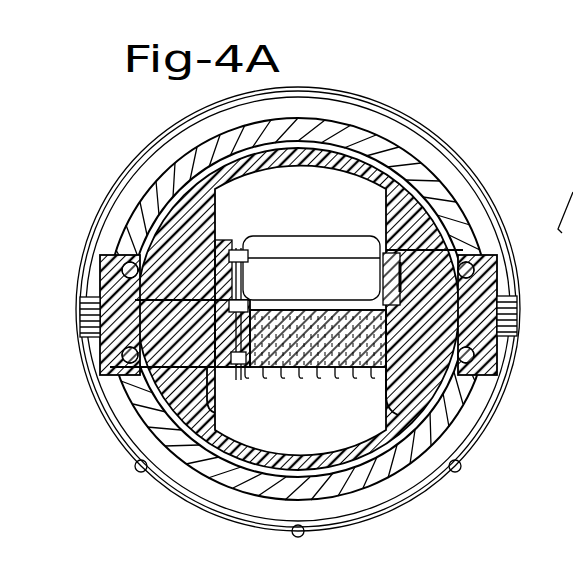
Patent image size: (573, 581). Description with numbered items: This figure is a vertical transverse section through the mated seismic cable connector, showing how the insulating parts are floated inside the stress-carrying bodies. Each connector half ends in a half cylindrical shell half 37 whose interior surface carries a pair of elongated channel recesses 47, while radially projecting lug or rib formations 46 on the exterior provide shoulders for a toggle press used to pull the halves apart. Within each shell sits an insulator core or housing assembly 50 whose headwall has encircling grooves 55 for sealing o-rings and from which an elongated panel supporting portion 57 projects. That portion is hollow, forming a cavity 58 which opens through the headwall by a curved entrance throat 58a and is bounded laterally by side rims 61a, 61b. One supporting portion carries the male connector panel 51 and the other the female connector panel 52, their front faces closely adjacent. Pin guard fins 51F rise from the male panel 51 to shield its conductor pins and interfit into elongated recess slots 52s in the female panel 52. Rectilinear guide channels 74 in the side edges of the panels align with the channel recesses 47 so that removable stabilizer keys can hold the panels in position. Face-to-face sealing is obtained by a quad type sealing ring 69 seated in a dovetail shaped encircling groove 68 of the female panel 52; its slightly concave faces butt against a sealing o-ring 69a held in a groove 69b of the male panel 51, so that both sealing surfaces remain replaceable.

The shell half 37 is at (247, 493).
The lug or shoulder-forming rib formations 46 is at (181, 480).
The channel recesses 47 is at (112, 378).
The insulator core or housing assembly 50 is at (563, 499).
The male connector panel 51 is at (222, 372).
The pin guard fins 51F is at (440, 323).
The female connector panel 52 is at (153, 257).
The recess slots 52s is at (380, 282).
The encircling grooves 55 is at (570, 452).
The panel supporting portion 57 is at (227, 453).
The cavity 58 is at (340, 422).
The entrance throat 58a is at (572, 409).
The side rim 61a is at (413, 200).
The side rim 61b is at (175, 406).
The encircling groove 68 is at (205, 252).
The quad type sealing ring 69 is at (127, 278).
The sealing o-ring 69a is at (250, 313).
The groove 69b is at (503, 323).
The guide channels 74 is at (208, 405).